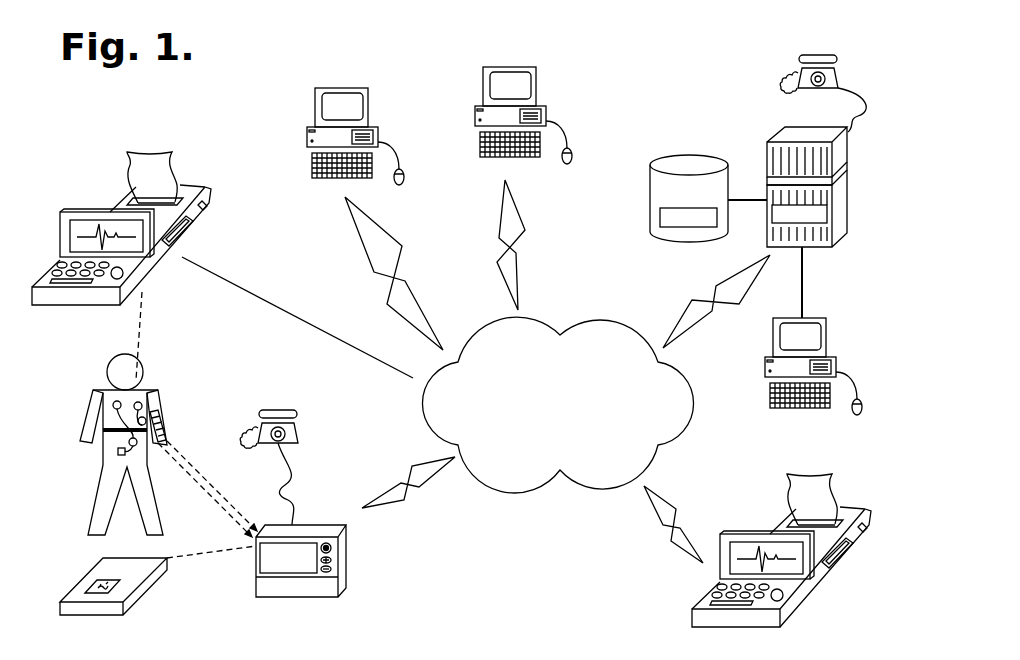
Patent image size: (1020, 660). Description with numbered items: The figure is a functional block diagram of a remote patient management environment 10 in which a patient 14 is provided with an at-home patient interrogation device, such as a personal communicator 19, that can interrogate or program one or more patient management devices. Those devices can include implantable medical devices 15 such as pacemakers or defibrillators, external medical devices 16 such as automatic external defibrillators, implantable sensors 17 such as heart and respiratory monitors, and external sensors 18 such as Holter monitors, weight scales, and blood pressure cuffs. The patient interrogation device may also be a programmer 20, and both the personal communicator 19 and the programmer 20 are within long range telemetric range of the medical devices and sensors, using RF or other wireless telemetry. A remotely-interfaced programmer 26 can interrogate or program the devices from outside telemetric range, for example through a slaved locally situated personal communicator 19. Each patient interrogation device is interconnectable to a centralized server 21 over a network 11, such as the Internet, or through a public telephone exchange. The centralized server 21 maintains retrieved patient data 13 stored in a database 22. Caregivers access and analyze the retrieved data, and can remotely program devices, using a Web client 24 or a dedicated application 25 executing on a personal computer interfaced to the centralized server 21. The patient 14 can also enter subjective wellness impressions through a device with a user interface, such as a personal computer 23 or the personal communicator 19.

The remote patient management environment 10 is at (176, 109).
The network 11 is at (478, 333).
The patient data 13 is at (660, 227).
The patient 14 is at (102, 455).
The implantable medical device 15 is at (160, 408).
The external medical device 16 is at (99, 397).
The implantable sensor 17 is at (166, 429).
The external sensor 18 is at (148, 590).
The personal communicator 19 is at (332, 525).
The programmer 20 is at (85, 212).
The centralized server 21 is at (765, 145).
The database 22 is at (650, 195).
The personal computer 23 is at (370, 102).
The Web client 24 is at (537, 82).
The dedicated application 25 is at (828, 335).
The remotely-interfaced programmer 26 is at (747, 532).